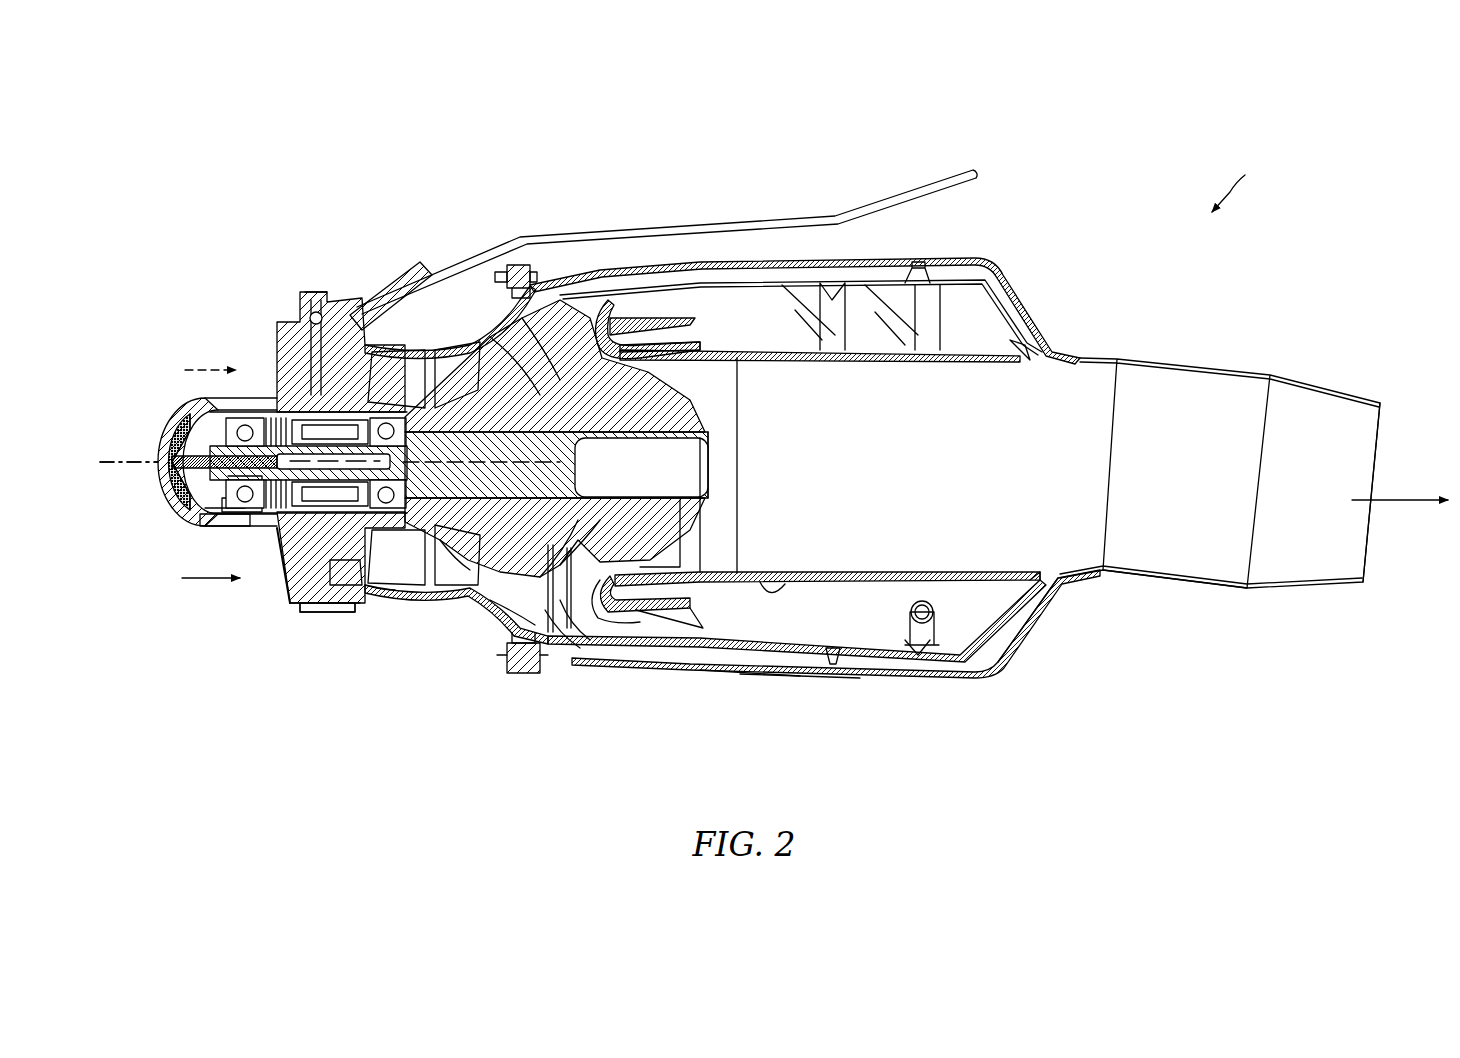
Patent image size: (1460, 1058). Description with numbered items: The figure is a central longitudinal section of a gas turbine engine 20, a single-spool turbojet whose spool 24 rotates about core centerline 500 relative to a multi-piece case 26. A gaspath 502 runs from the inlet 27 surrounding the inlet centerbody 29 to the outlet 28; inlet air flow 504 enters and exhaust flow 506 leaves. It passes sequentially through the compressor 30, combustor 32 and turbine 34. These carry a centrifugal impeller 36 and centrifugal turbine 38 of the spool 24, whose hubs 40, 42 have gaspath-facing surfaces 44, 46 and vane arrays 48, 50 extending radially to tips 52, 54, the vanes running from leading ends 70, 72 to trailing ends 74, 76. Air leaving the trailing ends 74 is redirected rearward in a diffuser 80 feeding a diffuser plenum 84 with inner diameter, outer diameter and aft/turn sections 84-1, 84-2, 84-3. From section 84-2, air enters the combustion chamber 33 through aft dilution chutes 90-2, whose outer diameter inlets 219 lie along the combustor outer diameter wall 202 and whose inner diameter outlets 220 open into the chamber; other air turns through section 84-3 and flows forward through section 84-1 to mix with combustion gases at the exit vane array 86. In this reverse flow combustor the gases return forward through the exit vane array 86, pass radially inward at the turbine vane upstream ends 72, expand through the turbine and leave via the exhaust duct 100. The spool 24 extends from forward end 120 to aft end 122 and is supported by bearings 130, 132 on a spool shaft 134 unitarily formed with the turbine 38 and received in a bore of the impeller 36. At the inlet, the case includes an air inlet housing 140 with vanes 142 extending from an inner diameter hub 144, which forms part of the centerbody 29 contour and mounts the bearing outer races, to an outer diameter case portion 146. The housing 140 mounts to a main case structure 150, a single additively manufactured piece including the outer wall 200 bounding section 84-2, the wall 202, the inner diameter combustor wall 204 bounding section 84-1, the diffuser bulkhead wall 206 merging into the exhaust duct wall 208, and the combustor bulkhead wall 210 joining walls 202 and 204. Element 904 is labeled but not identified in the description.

The gas turbine engine 20 is at (1240, 179).
The spool 24 is at (505, 517).
The case 26 is at (751, 682).
The inlet 27 is at (275, 586).
The outlet 28 is at (1366, 580).
The inlet centerbody 29 is at (183, 393).
The compressor section 30 is at (477, 283).
The combustor section 32 is at (952, 642).
The combustion chamber 33 is at (866, 628).
The turbine section 34 is at (598, 311).
The centrifugal impeller 36 is at (505, 622).
The centrifugal turbine 38 is at (600, 592).
The impeller hub 40 is at (484, 395).
The turbine hub 42 is at (612, 526).
The gaspath-facing surface 44 is at (425, 566).
The gaspath-facing surface 46 is at (592, 355).
The impeller vanes 48 is at (440, 576).
The turbine vanes 50 is at (642, 386).
The impeller vane tips 52 is at (450, 582).
The turbine vane tips 54 is at (621, 582).
The impeller vane leading ends 70 is at (382, 582).
The turbine vane leading ends 72 is at (560, 602).
The impeller vane trailing ends 74 is at (530, 659).
The turbine vane trailing ends 76 is at (680, 556).
The diffuser 80 is at (601, 297).
The diffuser plenum 84 is at (774, 272).
The diffuser plenum inner diameter section 84-1 is at (949, 362).
The diffuser plenum outer diameter section 84-2 is at (892, 259).
The diffuser plenum aft/turn section 84-3 is at (1020, 308).
The exit vane array 86 is at (661, 299).
The aft dilution chutes 90-2 is at (932, 300).
The exhaust duct 100 is at (1062, 408).
The spool forward end 120 is at (215, 490).
The spool aft end 122 is at (718, 465).
The bearing 130 is at (225, 528).
The bearing 132 is at (350, 566).
The spool shaft 134 is at (315, 440).
The air inlet housing 140 is at (310, 614).
The inlet vanes 142 is at (280, 598).
The inner diameter hub 144 is at (265, 525).
The outer diameter case portion 146 is at (310, 316).
The main case structure 150 is at (796, 702).
The outer wall 200 is at (875, 677).
The combustor outer diameter wall 202 is at (833, 662).
The inner diameter combustor wall 204 is at (781, 584).
The diffuser bulkhead wall section 206 is at (1006, 646).
The exhaust duct wall 208 is at (1140, 590).
The combustor bulkhead wall 210 is at (1027, 607).
The dilution chute outer diameter inlets 219 is at (834, 272).
The dilution chute inner diameter outlets 220 is at (924, 608).
The core centerline 500 is at (105, 456).
The primary gas flowpath 502 is at (200, 365).
The inlet gas flow 504 is at (182, 578).
The exhaust flow 506 is at (1352, 497).
The fuel passage 904 is at (842, 311).